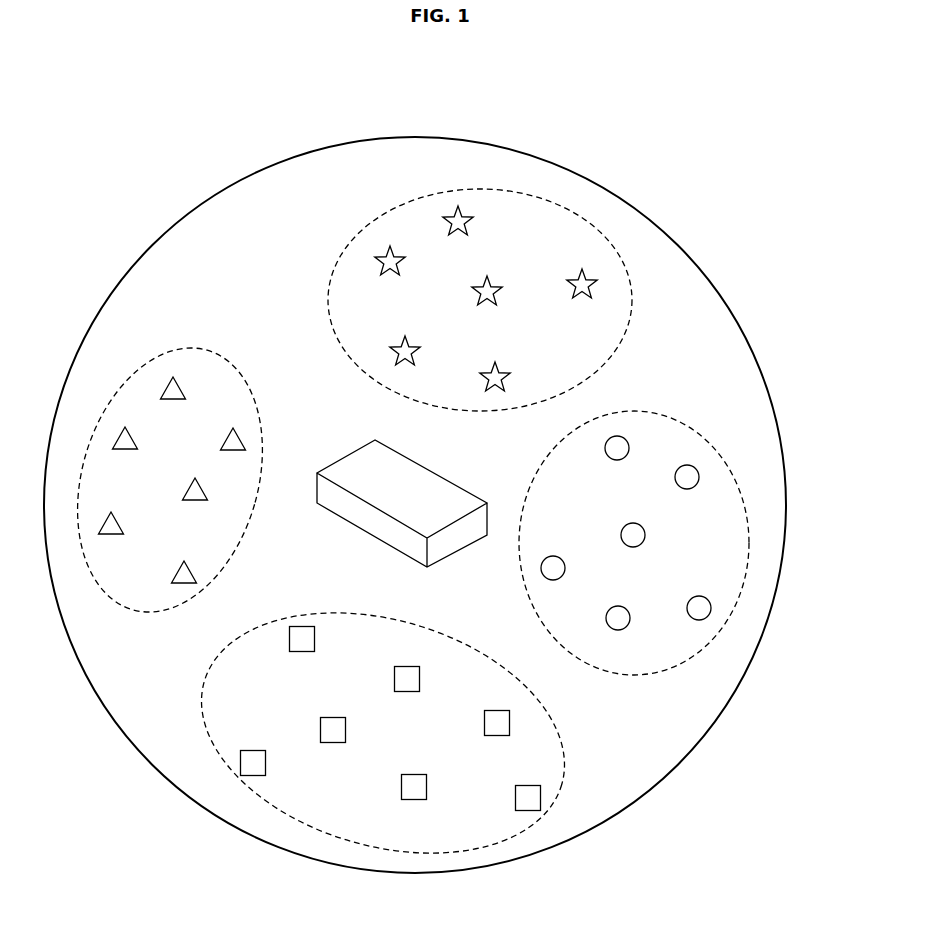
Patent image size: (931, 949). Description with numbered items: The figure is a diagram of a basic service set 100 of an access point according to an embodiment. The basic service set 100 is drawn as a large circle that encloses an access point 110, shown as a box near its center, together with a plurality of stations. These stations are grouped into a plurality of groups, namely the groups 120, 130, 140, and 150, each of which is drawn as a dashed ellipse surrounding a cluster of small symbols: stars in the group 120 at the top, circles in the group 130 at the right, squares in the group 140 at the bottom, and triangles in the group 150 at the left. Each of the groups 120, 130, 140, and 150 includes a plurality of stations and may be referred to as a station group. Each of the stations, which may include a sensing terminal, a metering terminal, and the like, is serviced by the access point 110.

The basic service set 100 is at (415, 137).
The access point 110 is at (437, 477).
The station group 120 is at (543, 198).
The station group 130 is at (700, 430).
The station group 140 is at (358, 840).
The station group 150 is at (150, 358).